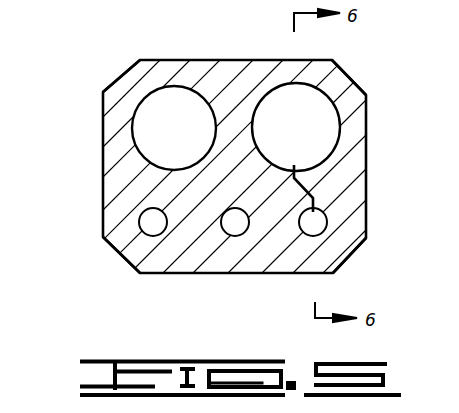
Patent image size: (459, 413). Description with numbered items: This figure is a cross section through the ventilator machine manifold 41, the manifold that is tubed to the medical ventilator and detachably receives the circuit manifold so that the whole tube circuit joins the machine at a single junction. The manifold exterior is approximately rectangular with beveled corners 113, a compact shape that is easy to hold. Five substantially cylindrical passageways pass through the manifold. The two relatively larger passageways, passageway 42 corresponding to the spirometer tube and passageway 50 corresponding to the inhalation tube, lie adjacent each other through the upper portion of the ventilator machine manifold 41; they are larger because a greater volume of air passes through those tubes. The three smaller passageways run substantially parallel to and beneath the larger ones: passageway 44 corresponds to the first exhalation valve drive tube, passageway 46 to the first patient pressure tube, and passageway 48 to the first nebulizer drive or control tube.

The ventilator machine manifold 41 is at (90, 163).
The passageway 42 is at (178, 88).
The passageway 50 is at (320, 98).
The passageway 44 is at (147, 227).
The passageway 46 is at (232, 226).
The passageway 48 is at (319, 227).
The beveled corners 113 is at (118, 77).